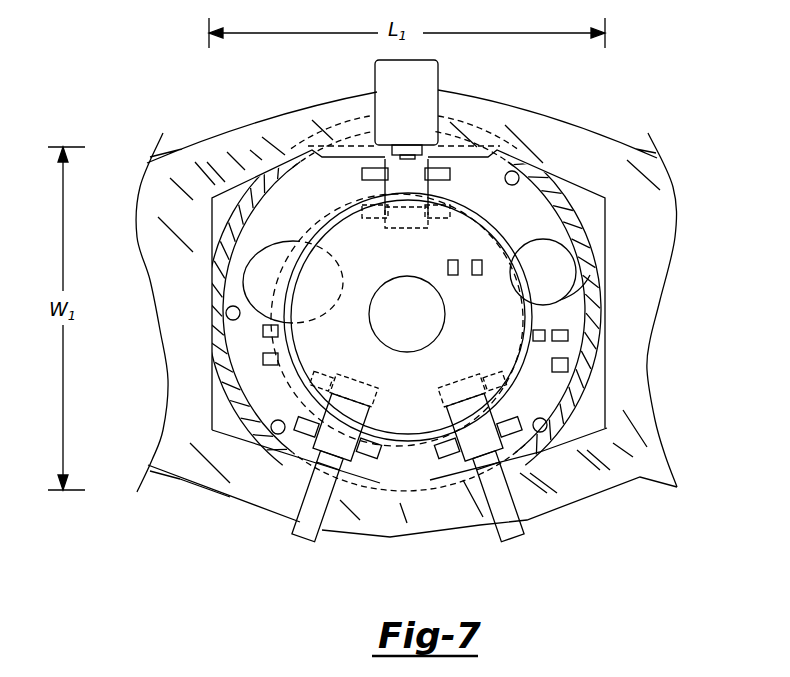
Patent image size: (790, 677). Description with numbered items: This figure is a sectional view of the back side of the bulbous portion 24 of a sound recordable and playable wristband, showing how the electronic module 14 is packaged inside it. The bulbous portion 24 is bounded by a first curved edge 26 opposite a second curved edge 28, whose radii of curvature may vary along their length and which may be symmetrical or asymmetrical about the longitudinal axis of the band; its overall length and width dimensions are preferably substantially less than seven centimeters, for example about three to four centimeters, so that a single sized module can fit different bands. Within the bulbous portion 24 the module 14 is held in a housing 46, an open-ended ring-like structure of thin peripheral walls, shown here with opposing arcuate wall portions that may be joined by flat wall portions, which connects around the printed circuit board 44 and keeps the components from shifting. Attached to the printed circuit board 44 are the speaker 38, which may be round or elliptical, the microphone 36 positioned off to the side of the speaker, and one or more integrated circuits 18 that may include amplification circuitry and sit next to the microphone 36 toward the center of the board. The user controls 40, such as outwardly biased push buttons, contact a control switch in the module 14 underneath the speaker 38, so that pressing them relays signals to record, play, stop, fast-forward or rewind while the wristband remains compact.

The module 14 is at (578, 207).
The integrated circuit 18 is at (560, 293).
The bulbous portion 24 is at (628, 511).
The first curved edge 26 is at (226, 497).
The second curved edge 28 is at (537, 113).
The microphone 36 is at (258, 277).
The speaker 38 is at (357, 230).
The user controls 40 is at (438, 77).
The printed circuit board 44 is at (577, 315).
The housing 46 is at (580, 218).